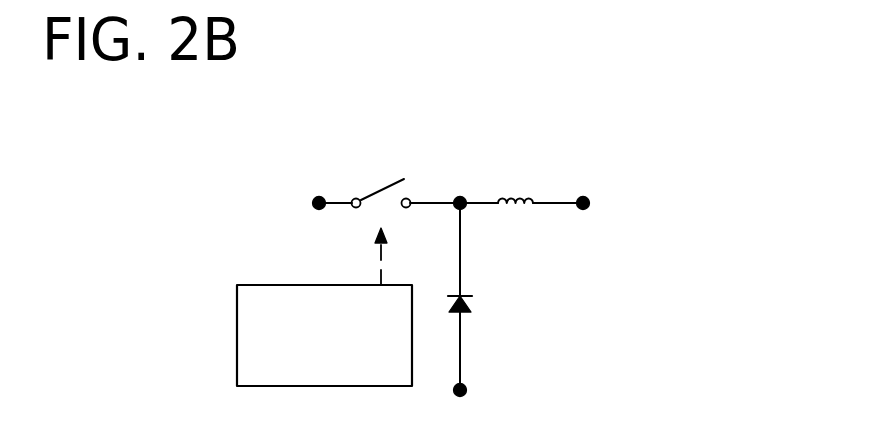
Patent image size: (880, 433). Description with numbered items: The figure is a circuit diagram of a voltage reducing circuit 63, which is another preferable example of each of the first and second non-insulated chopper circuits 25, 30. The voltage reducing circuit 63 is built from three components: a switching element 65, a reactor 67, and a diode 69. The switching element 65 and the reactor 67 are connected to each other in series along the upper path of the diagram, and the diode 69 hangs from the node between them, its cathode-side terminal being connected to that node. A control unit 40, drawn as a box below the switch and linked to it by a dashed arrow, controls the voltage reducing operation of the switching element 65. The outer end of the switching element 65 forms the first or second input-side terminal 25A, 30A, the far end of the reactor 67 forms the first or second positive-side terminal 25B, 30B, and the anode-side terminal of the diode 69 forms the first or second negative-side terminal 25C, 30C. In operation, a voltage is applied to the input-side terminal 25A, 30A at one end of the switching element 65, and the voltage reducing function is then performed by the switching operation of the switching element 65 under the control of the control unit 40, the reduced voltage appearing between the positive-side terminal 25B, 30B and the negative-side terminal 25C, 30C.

The voltage reducing circuit 63 is at (455, 239).
The first non-insulated chopper circuit 25 is at (455, 239).
The second non-insulated chopper circuit 30 is at (477, 120).
The switching element 65 is at (374, 160).
The reactor 67 is at (529, 160).
The diode 69 is at (501, 307).
The first input-side terminal 25A is at (249, 219).
The second input-side terminal 30A is at (319, 203).
The first positive-side terminal 25B is at (658, 186).
The second positive-side terminal 30B is at (589, 201).
The first negative-side terminal 25C is at (387, 406).
The second negative-side terminal 30C is at (455, 390).
The control unit 40 is at (324, 307).